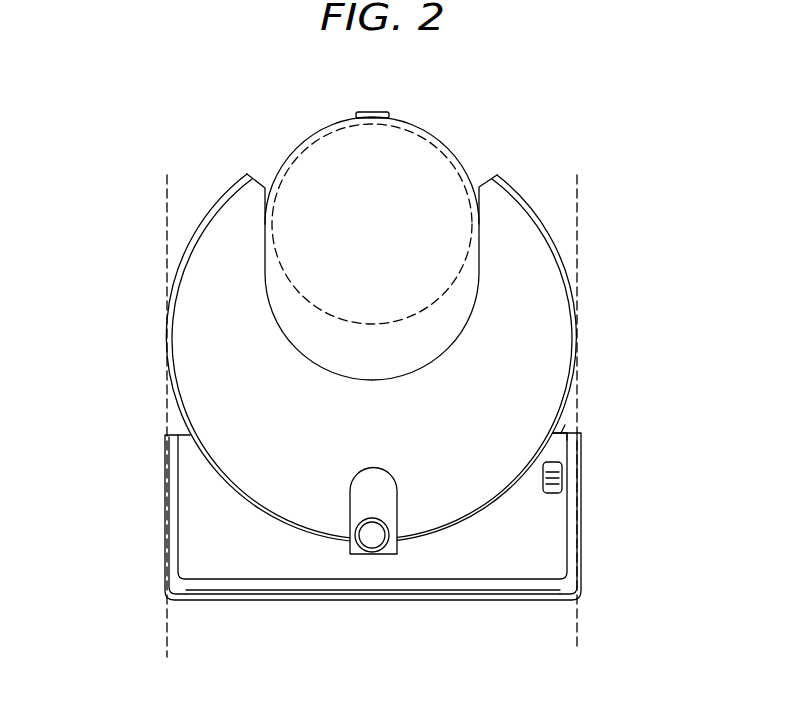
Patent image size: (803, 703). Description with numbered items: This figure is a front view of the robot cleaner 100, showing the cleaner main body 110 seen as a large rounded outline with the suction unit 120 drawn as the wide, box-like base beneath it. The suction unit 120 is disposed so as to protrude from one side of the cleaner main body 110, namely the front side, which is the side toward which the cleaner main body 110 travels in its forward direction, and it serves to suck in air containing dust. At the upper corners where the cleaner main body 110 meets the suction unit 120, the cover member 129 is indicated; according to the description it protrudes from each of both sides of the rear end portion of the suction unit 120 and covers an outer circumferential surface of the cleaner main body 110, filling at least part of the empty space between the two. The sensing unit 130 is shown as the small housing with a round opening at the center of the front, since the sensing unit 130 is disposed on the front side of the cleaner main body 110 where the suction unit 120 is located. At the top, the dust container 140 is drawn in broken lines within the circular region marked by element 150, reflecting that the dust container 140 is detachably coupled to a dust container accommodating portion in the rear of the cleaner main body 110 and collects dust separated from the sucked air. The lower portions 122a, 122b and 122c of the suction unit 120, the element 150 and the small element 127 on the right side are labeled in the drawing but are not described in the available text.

The robot cleaner 100 is at (188, 107).
The cleaner main body 110 is at (544, 330).
The suction unit 120 is at (523, 543).
The bottom surface of base 122a is at (475, 602).
The right side surface of base 122b is at (583, 502).
The left side surface of base 122c is at (165, 502).
The button 127 is at (563, 465).
The cover member 129 is at (562, 428).
The sensing unit 130 is at (363, 502).
The dust container 140 is at (434, 141).
The cover ring 150 is at (321, 134).